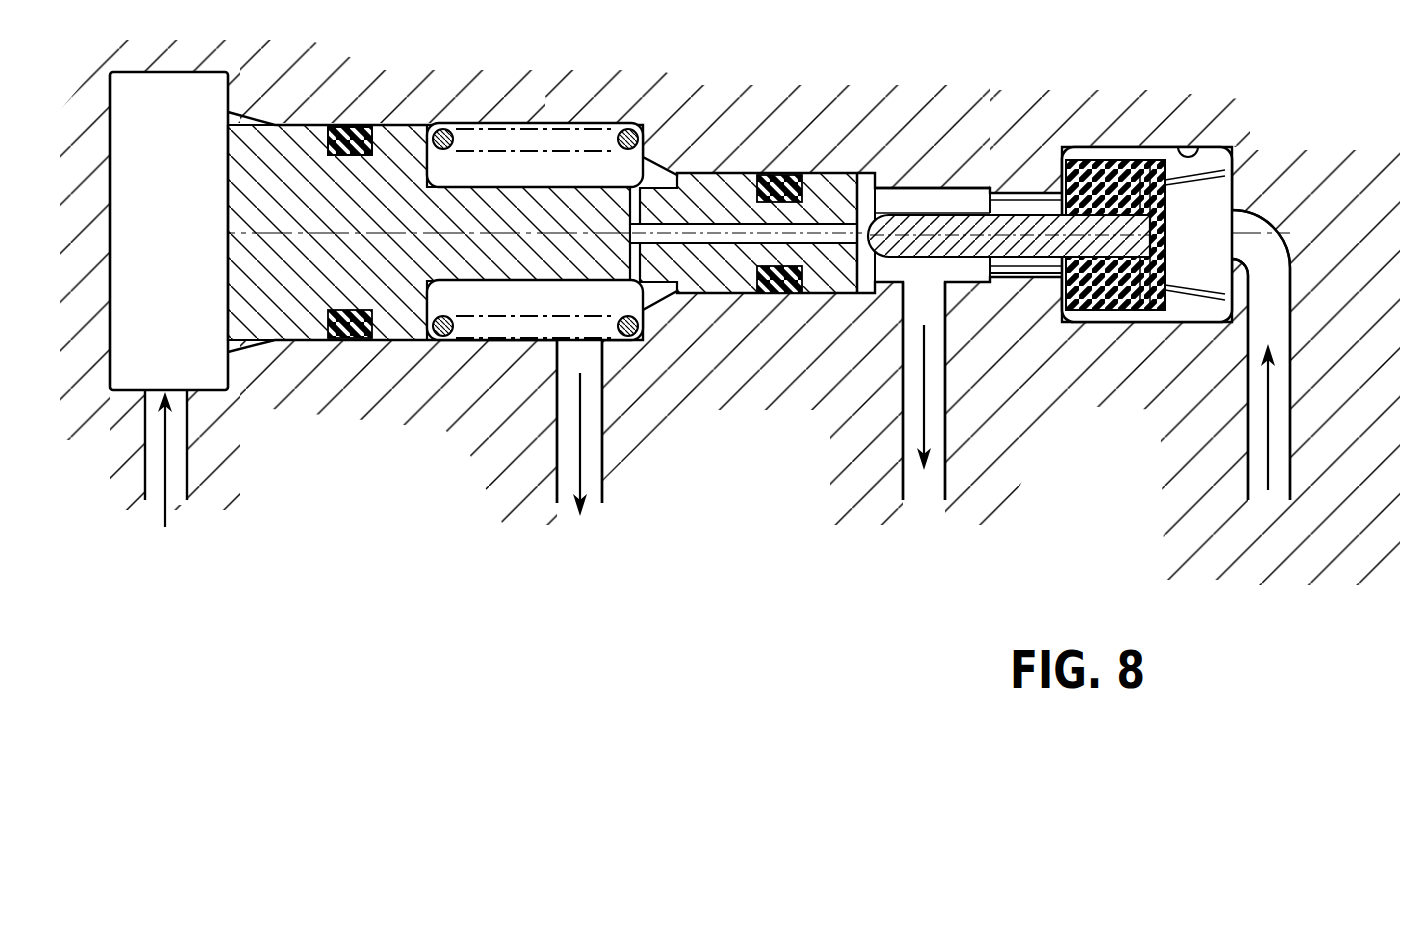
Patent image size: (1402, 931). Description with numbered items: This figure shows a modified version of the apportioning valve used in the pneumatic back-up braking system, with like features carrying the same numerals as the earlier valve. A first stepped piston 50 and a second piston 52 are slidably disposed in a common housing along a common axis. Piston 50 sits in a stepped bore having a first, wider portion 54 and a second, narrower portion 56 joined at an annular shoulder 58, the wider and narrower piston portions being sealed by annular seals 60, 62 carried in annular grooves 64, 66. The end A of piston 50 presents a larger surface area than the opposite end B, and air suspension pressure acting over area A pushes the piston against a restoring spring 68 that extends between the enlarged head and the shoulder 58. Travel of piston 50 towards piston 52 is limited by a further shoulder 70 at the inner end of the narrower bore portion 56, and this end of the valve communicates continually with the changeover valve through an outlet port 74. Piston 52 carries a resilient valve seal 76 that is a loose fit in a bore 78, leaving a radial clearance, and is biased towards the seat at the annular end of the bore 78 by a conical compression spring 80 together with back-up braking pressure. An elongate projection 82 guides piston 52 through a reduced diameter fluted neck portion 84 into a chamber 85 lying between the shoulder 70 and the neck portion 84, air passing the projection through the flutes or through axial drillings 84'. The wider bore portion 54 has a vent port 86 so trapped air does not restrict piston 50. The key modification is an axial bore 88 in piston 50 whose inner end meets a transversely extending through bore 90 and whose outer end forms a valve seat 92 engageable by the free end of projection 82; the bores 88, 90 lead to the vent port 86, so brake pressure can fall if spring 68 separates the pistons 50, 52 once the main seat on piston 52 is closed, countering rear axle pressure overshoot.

The end of piston 50 (surface area A) A is at (228, 165).
The first stepped piston 50 is at (518, 220).
The second piston 52 is at (1062, 298).
The first, wider bore portion 54 is at (314, 125).
The second, narrower bore portion 56 is at (744, 174).
The annular shoulder 58 is at (647, 156).
The annular seal 60 is at (376, 152).
The annular seal 62 is at (778, 174).
The annular groove 64 is at (316, 144).
The annular groove 66 is at (752, 201).
The restoring spring 68 is at (458, 349).
The further shoulder 70 is at (864, 295).
The outlet port 74 is at (944, 298).
The resilient valve seal 76 is at (1104, 162).
The bore 78 is at (1189, 146).
The conical compression spring 80 is at (1238, 191).
The elongate projection 82 is at (950, 208).
The fluted neck portion 84 is at (1026, 200).
The axial drillings 84' is at (1024, 233).
The chamber 85 is at (912, 200).
The vent port 86 is at (603, 385).
The axial bore 88 is at (751, 295).
The transversely extending through bore 90 is at (630, 262).
The valve seat 92 is at (848, 168).
The end of piston 50 (surface area B) B is at (880, 185).